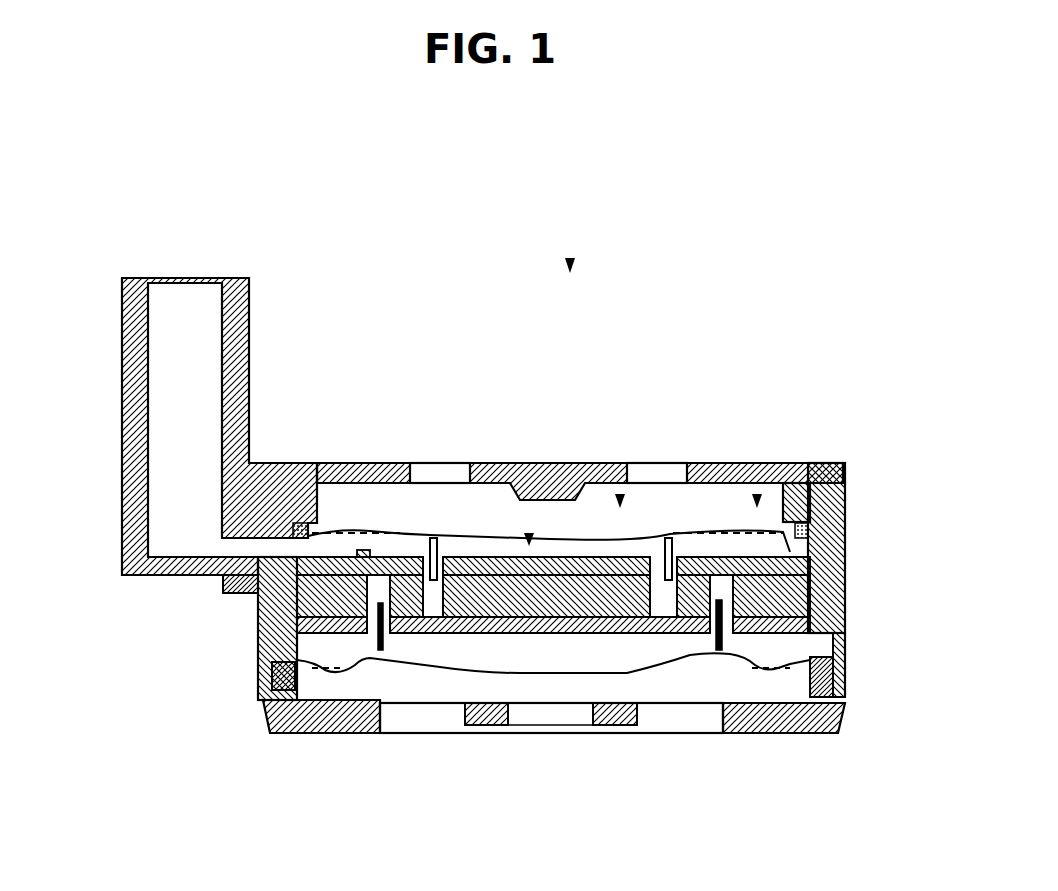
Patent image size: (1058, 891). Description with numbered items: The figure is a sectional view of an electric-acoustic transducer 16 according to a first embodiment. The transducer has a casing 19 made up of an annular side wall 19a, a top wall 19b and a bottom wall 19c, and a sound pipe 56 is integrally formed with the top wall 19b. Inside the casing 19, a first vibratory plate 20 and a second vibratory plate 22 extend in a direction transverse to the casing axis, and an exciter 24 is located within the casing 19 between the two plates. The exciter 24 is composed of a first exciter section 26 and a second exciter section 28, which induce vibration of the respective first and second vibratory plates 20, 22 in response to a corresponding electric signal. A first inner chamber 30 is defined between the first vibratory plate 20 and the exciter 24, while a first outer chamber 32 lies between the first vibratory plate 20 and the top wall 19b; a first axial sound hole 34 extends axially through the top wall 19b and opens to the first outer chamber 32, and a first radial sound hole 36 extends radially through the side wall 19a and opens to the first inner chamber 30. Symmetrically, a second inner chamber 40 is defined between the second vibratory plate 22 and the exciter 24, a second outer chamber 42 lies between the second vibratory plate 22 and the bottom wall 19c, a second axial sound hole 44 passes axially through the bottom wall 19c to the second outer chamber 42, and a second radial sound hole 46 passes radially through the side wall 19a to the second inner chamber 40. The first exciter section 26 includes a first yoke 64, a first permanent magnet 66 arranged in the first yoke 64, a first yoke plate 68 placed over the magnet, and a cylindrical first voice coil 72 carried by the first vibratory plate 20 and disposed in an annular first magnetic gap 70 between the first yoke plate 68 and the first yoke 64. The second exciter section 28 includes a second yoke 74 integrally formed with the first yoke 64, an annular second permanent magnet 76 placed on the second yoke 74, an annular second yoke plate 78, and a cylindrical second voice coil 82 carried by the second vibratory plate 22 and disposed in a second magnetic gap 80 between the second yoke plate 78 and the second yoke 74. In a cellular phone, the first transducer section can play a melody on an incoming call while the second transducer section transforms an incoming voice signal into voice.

The electric-acoustic transducer 16 is at (569, 266).
The casing 19 is at (583, 463).
The annular side wall 19a is at (845, 473).
The top wall 19b is at (800, 463).
The bottom wall 19c is at (808, 733).
The first vibratory plate 20 is at (540, 543).
The second vibratory plate 22 is at (507, 722).
The exciter 24 is at (528, 538).
The first exciter section 26 is at (620, 500).
The second exciter section 28 is at (757, 500).
The first inner chamber 30 is at (452, 600).
The first outer chamber 32 is at (330, 510).
The first axial sound hole 34 is at (455, 463).
The first radial sound hole 36 is at (243, 548).
The second inner chamber 40 is at (622, 660).
The second outer chamber 42 is at (750, 690).
The second axial sound hole 44 is at (393, 718).
The second radial sound hole 46 is at (832, 647).
The sound pipe 56 is at (122, 342).
The first yoke 64 is at (580, 560).
The first permanent magnet 66 is at (481, 600).
The first yoke plate 68 is at (482, 600).
The first magnetic gap 70 is at (397, 543).
The first voice coil 72 is at (430, 538).
The second yoke 74 is at (815, 555).
The second permanent magnet 76 is at (812, 588).
The second yoke plate 78 is at (812, 628).
The second magnetic gap 80 is at (705, 552).
The second voice coil 82 is at (672, 538).